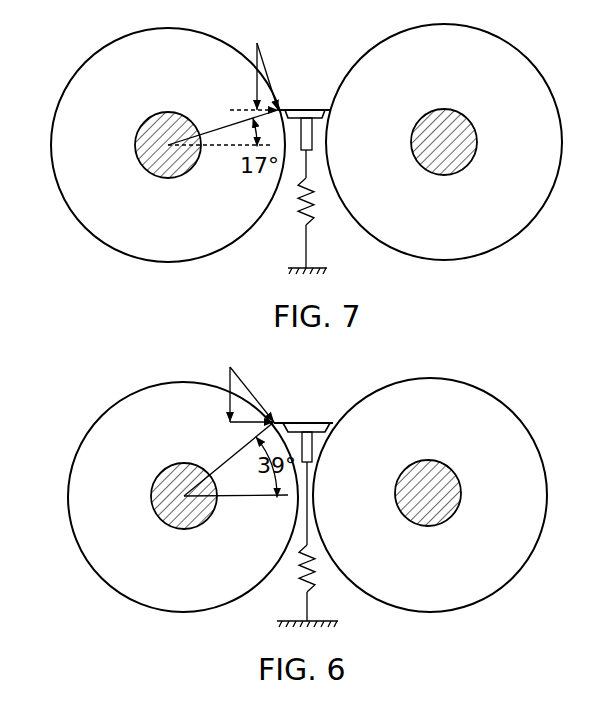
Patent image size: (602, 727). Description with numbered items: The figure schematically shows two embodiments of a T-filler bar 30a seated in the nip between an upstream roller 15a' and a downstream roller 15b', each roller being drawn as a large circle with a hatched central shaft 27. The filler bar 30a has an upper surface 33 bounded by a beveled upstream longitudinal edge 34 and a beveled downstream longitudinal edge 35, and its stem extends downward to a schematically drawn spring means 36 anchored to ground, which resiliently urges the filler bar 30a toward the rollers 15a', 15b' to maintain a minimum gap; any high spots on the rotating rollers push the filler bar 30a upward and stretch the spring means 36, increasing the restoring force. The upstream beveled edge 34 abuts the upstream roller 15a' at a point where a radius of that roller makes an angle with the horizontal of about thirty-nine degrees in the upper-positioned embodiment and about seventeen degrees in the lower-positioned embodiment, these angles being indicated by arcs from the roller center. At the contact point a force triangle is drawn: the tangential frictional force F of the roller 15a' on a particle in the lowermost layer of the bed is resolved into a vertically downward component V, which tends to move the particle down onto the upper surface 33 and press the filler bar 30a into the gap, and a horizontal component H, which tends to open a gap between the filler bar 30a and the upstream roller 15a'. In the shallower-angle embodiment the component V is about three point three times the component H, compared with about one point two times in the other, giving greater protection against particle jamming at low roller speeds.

In FIG. 7, the upstream roller 15a' is at (168, 161).
In FIG. 6, the upstream roller 15a' is at (183, 512).
In FIG. 7, the downstream roller 15b' is at (444, 159).
In FIG. 6, the downstream roller 15b' is at (430, 505).
In FIG. 7, the roller shaft 27 is at (183, 167).
In FIG. 6, the roller shaft 27 is at (197, 513).
In FIG. 7, the T-filler bar 30a is at (324, 116).
In FIG. 6, the T-filler bar 30a is at (328, 429).
In FIG. 7, the upper surface 33 is at (297, 110).
In FIG. 6, the upper surface 33 is at (310, 422).
In FIG. 7, the upstream beveled edge 34 is at (280, 109).
In FIG. 6, the upstream beveled edge 34 is at (274, 421).
In FIG. 7, the downstream beveled edge 35 is at (333, 110).
In FIG. 6, the downstream beveled edge 35 is at (332, 428).
In FIG. 7, the spring means 36 is at (308, 223).
In FIG. 6, the spring means 36 is at (310, 590).
In FIG. 7, the tangential frictional force F is at (266, 55).
In FIG. 6, the tangential frictional force F is at (245, 382).
In FIG. 7, the vertical component V is at (254, 78).
In FIG. 6, the vertical component V is at (228, 412).
In FIG. 7, the horizontal component H is at (254, 111).
In FIG. 6, the horizontal component H is at (248, 425).